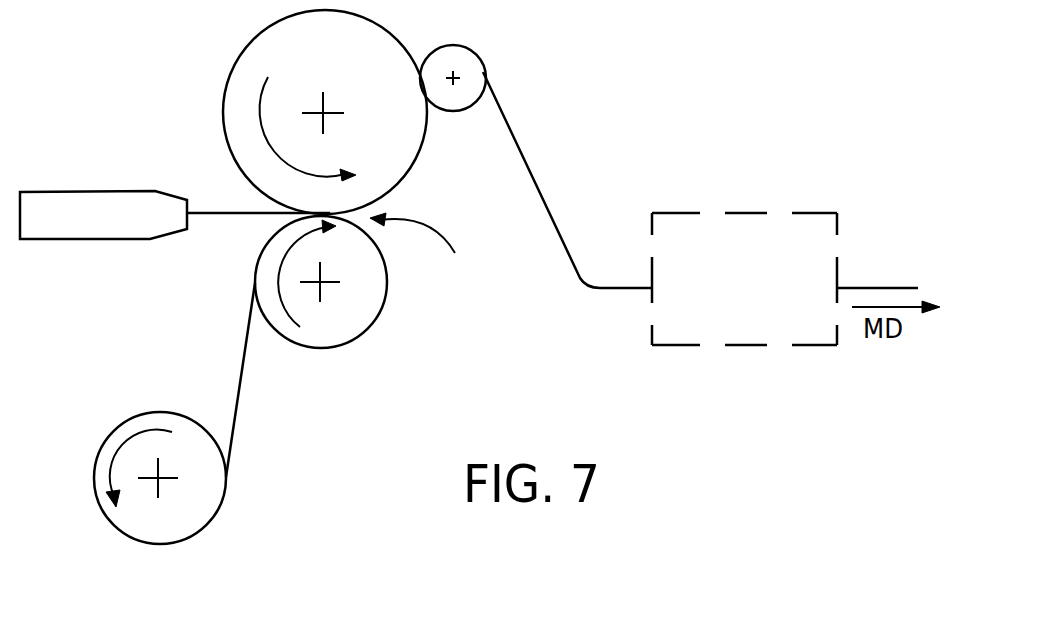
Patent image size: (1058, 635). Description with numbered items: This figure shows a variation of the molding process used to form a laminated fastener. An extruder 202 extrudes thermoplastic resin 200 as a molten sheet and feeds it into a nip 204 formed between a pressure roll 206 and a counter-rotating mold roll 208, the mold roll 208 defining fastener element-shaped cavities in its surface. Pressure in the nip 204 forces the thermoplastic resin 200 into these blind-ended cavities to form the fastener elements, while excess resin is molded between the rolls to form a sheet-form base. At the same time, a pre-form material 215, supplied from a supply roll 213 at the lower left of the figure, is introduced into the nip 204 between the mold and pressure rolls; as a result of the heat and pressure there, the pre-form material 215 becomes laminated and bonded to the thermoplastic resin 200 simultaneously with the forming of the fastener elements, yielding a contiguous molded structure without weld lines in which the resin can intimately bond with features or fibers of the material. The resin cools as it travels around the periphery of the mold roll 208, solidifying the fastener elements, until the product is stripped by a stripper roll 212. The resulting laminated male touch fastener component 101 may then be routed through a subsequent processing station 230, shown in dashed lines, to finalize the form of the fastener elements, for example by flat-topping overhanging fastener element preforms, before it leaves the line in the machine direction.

The laminated male touch fastener component 101 is at (847, 277).
The thermoplastic resin 200 is at (232, 213).
The extruder 202 is at (93, 191).
The nip 204 is at (427, 249).
The pressure roll 206 is at (383, 295).
The mold roll 208 is at (348, 60).
The stripper roll 212 is at (448, 112).
The unwind roll 213 is at (112, 432).
The pre-form material 215 is at (237, 397).
The subsequent processing station 230 is at (722, 212).